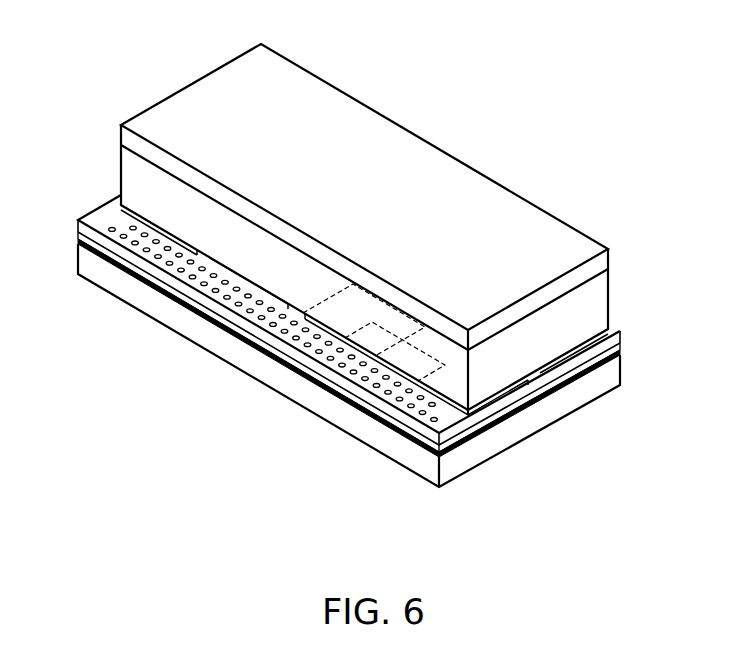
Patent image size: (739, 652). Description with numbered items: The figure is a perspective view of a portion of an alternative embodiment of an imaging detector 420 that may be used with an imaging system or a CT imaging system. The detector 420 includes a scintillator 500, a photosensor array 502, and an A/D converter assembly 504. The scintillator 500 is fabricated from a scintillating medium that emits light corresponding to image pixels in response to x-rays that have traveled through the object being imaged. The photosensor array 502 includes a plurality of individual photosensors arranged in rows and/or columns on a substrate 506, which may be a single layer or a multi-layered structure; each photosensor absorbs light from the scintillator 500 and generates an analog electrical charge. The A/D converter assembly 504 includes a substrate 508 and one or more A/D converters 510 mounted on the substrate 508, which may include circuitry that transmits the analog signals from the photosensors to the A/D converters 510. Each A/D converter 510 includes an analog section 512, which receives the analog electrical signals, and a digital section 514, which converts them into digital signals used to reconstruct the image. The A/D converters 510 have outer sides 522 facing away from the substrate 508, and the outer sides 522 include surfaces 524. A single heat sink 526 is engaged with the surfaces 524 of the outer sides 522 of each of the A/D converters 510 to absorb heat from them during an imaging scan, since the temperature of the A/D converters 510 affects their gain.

The imaging detector 420 is at (592, 60).
The scintillator 500 is at (618, 374).
The photosensor array 502 is at (631, 345).
The A/D converter assembly 504 is at (113, 120).
The substrate 506 is at (437, 458).
The substrate 508 is at (412, 438).
The A/D converters 510 is at (136, 222).
The analog section 512 is at (306, 314).
The digital section 514 is at (362, 342).
The outer sides 522 is at (536, 401).
The surfaces 524 is at (453, 380).
The heat sink 526 is at (560, 213).